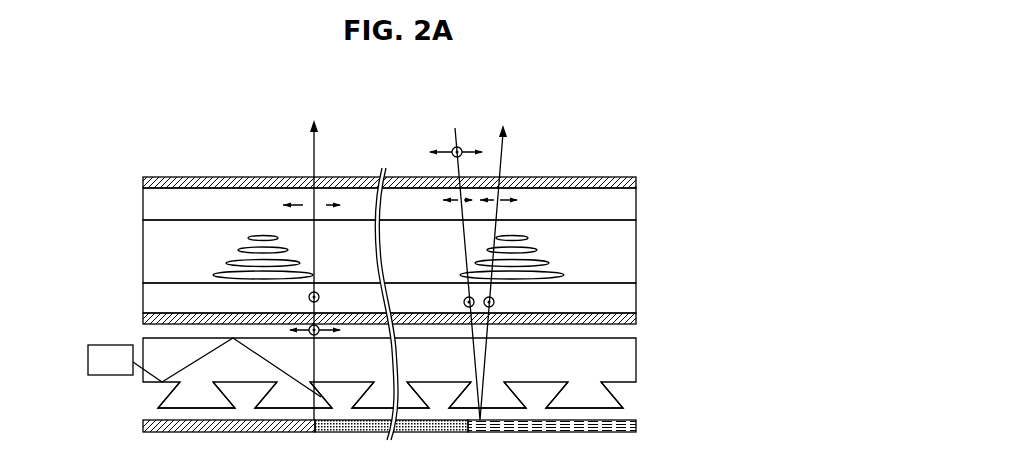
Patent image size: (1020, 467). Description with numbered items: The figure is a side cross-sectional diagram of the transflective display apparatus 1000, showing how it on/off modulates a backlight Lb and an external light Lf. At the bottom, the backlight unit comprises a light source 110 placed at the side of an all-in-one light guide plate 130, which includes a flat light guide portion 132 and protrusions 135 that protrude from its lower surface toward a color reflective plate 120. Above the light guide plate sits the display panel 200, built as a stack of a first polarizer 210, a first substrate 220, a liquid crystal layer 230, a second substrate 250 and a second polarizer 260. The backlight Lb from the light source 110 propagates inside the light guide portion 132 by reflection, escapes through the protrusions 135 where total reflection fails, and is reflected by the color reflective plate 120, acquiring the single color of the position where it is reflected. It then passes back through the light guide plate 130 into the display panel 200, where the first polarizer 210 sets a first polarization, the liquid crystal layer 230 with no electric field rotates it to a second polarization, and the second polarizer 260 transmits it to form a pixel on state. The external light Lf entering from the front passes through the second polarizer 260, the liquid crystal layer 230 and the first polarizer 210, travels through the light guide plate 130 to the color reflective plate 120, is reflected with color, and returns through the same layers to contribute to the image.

The transflective display apparatus 1000 is at (605, 133).
The display panel 200 is at (650, 177).
The second polarizer 260 is at (143, 177).
The second substrate 250 is at (152, 202).
The liquid crystal layer 230 is at (152, 252).
The first substrate 220 is at (150, 297).
The first polarizer 210 is at (143, 319).
The all-in-one light guide plate 130 is at (692, 347).
The light guide portion 132 is at (632, 357).
The protrusions 135 is at (598, 395).
The color reflective plate 120 is at (637, 425).
The light source 110 is at (100, 377).
The external light Lf is at (455, 137).
The backlight Lb is at (147, 382).